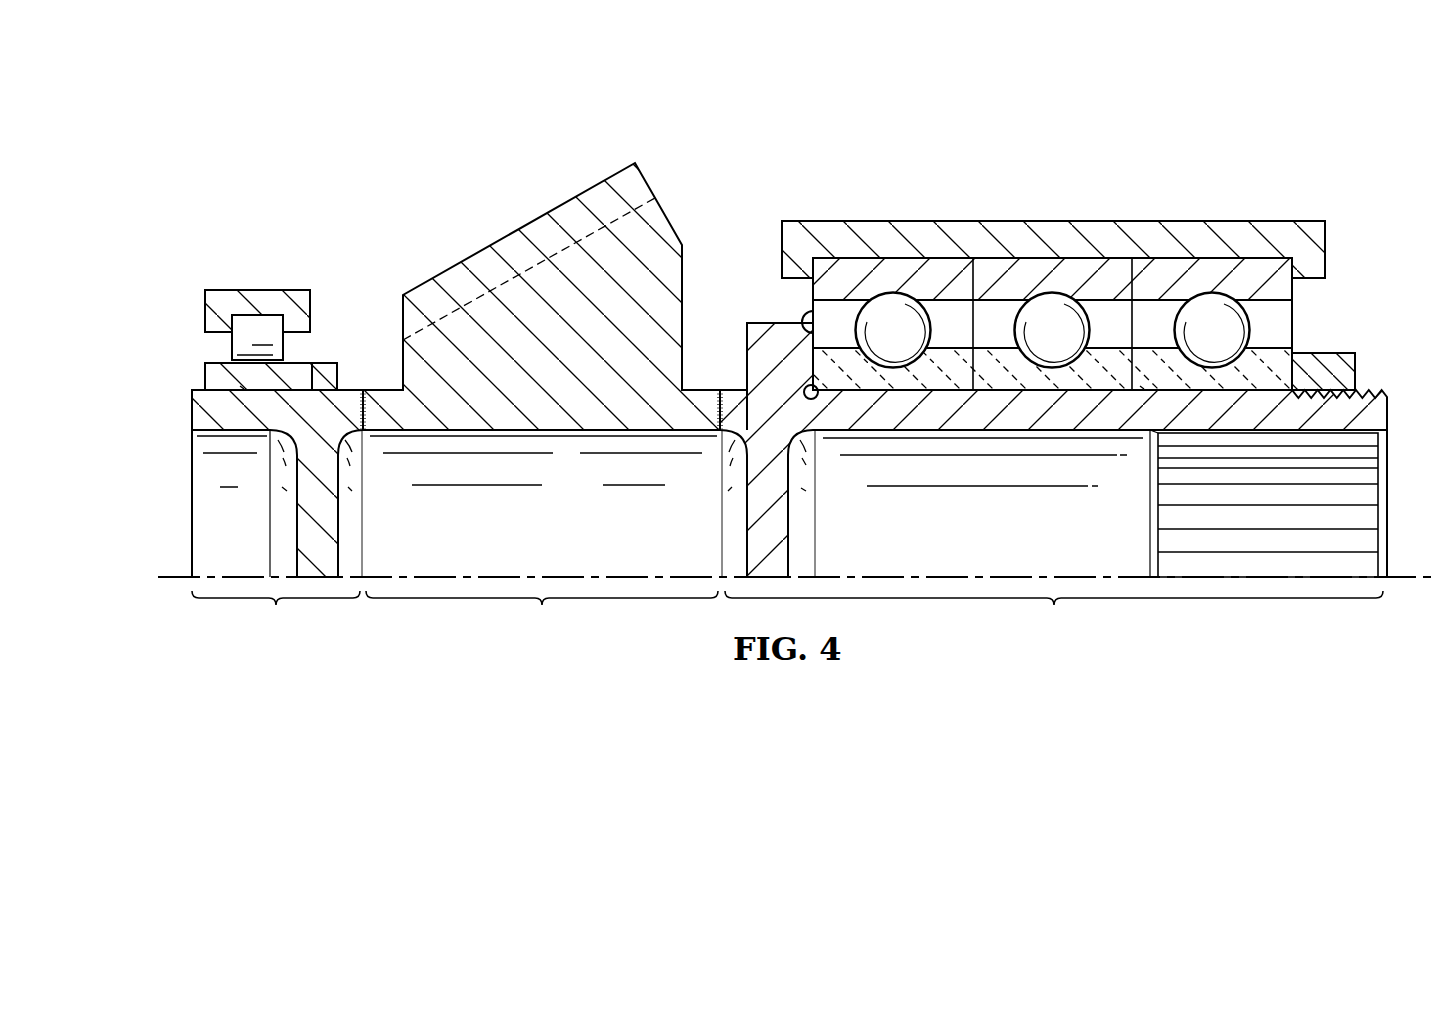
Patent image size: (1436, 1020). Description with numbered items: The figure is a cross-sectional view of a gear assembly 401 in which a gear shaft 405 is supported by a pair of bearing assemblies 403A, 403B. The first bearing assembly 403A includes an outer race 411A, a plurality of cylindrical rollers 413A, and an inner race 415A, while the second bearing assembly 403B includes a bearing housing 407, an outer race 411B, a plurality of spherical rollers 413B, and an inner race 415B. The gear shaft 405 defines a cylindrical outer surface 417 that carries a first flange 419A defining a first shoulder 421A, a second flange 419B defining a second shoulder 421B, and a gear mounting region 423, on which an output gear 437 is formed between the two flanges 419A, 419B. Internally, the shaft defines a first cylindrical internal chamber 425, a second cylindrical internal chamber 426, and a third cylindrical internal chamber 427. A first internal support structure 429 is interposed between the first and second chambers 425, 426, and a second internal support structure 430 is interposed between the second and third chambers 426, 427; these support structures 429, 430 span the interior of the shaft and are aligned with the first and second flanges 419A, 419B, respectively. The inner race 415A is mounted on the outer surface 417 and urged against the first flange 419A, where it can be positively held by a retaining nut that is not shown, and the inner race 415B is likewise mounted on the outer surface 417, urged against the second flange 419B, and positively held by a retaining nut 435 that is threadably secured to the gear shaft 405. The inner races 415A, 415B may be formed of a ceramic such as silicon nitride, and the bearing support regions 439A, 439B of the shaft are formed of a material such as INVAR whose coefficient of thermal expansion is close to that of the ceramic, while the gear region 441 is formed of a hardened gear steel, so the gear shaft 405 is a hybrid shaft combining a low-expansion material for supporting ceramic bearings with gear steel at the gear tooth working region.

The gear assembly 401 is at (266, 120).
The bearing assembly 403A is at (253, 308).
The bearing assembly 403B is at (1060, 275).
The gear shaft 405 is at (746, 364).
The bearing housing 407 is at (1056, 228).
The outer race 411A is at (258, 292).
The outer race 411B is at (1283, 290).
The rollers 413A is at (236, 340).
The rollers 413B is at (1210, 300).
The inner race 415A is at (208, 376).
The inner race 415B is at (1280, 353).
The cylindrical outer surface 417 is at (243, 384).
The first flange 419A is at (338, 388).
The second flange 419B is at (757, 360).
The first shoulder 421A is at (298, 362).
The second shoulder 421B is at (816, 318).
The gear mounting region 423 is at (562, 440).
The first cylindrical internal chamber 425 is at (250, 543).
The second cylindrical internal chamber 426 is at (562, 543).
The third cylindrical internal chamber 427 is at (998, 543).
The first internal support structure 429 is at (338, 523).
The second internal support structure 430 is at (747, 510).
The retaining nut 435 is at (1347, 372).
The output gear 437 is at (647, 180).
The bearing support region 439A is at (276, 614).
The bearing support region 439B is at (1054, 614).
The gear region 441 is at (542, 614).